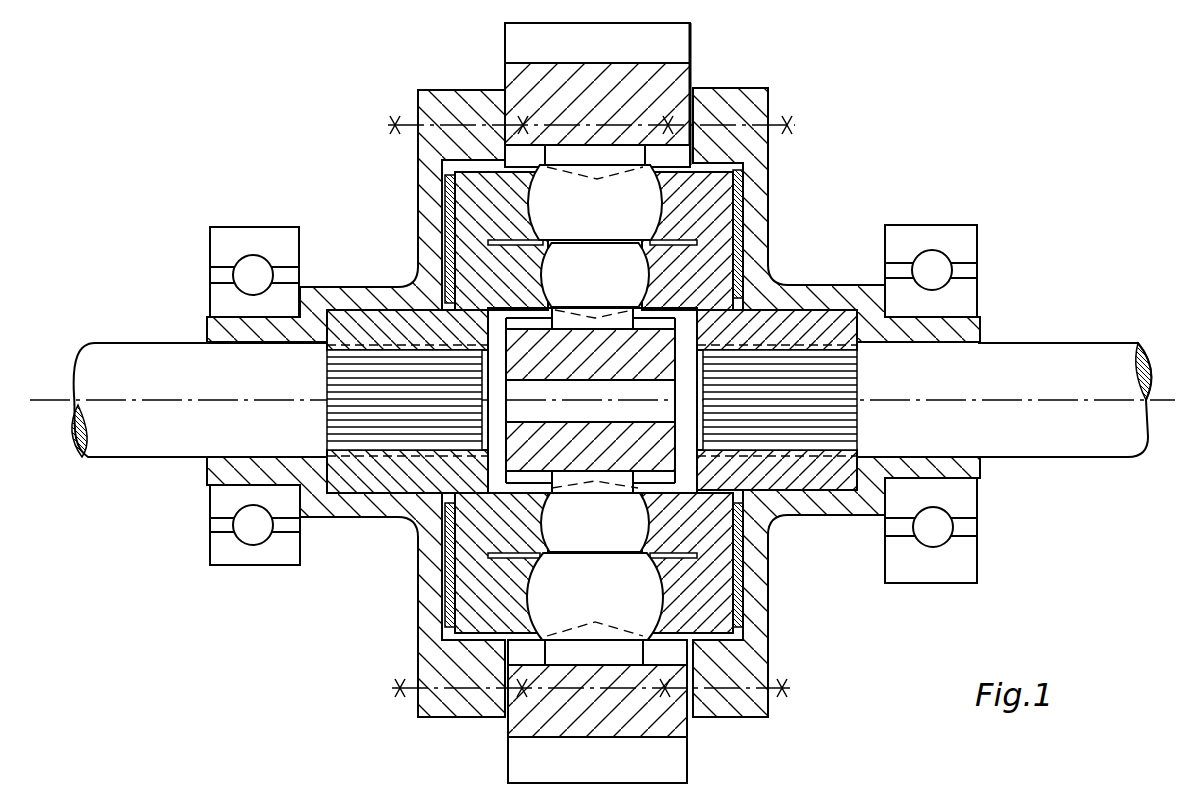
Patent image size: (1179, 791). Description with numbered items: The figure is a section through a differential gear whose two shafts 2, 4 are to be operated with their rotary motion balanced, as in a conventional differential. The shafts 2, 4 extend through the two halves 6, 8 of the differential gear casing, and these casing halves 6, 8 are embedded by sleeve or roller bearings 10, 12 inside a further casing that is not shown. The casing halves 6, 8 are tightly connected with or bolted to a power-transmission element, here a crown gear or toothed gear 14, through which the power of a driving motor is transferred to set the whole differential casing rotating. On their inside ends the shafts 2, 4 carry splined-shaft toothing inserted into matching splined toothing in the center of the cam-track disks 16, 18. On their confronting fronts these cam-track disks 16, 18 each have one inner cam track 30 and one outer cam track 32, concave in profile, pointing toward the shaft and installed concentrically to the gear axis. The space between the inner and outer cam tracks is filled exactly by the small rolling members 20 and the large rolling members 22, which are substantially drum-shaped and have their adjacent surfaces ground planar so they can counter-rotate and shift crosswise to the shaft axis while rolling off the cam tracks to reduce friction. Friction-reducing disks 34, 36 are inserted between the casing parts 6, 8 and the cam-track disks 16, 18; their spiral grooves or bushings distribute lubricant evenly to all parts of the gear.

The shaft 2 is at (135, 350).
The shaft 4 is at (1080, 355).
The casing half 6 is at (435, 139).
The casing half 8 is at (763, 167).
The sleeve or roller bearing 10 is at (960, 240).
The sleeve or roller bearing 12 is at (230, 238).
The crown gear or toothed gear 14 is at (673, 77).
The cam-track disk 16 is at (683, 278).
The cam-track disk 18 is at (483, 266).
The small rolling member 20 is at (595, 397).
The large rolling member 22 is at (595, 402).
The inner cam surface or track 30 is at (740, 218).
The outer cam surface or track 32 is at (693, 185).
The friction-reducing disk 34 is at (740, 571).
The friction-reducing disk 36 is at (442, 587).